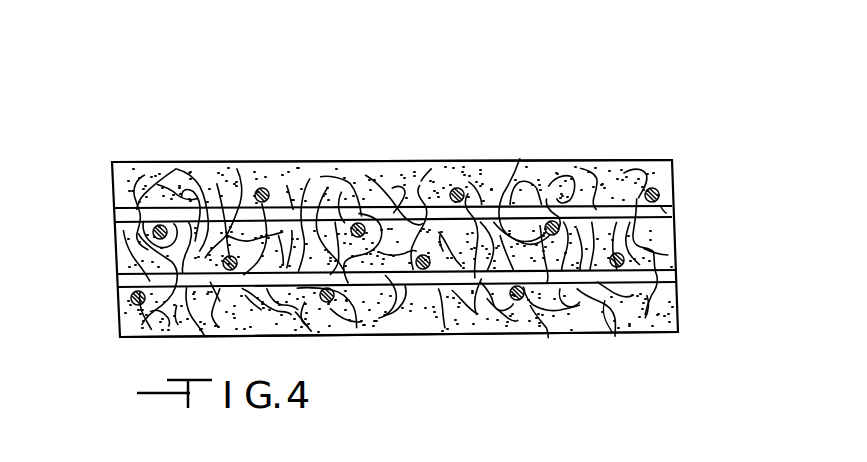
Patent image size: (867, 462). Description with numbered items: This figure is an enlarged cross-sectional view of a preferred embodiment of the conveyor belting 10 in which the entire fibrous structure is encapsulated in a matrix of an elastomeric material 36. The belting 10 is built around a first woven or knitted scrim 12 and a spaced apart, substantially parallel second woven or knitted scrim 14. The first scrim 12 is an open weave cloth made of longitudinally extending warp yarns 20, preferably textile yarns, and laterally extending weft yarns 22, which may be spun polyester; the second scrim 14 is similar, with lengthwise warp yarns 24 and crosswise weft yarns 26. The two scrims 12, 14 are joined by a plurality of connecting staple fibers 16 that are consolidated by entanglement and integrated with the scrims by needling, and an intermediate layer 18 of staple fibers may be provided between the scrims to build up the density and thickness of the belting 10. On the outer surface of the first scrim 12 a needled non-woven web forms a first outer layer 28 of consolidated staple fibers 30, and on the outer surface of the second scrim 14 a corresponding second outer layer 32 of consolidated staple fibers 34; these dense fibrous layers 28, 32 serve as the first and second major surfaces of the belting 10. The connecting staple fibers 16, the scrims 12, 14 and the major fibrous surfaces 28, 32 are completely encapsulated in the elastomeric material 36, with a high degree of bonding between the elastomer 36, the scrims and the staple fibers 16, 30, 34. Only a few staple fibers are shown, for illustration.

The double-scrim belting 10 is at (443, 146).
The first woven or knitted scrim 12 is at (112, 212).
The second woven or knitted scrim 14 is at (111, 284).
The connecting staple fibers 16 is at (111, 250).
The intermediate layer of staple fibers 18 is at (650, 237).
The warp yarns of first scrim 20 is at (675, 210).
The weft yarns of first scrim 22 is at (268, 190).
The warp yarns of second scrim 24 is at (672, 277).
The weft yarns of second scrim 26 is at (668, 258).
The first outer layer 28 is at (111, 179).
The consolidated staple fibers of first outer layer 30 is at (500, 182).
The second outer layer 32 is at (112, 310).
The consolidated staple fibers of second outer layer 34 is at (612, 332).
The elastomeric material 36 is at (650, 165).